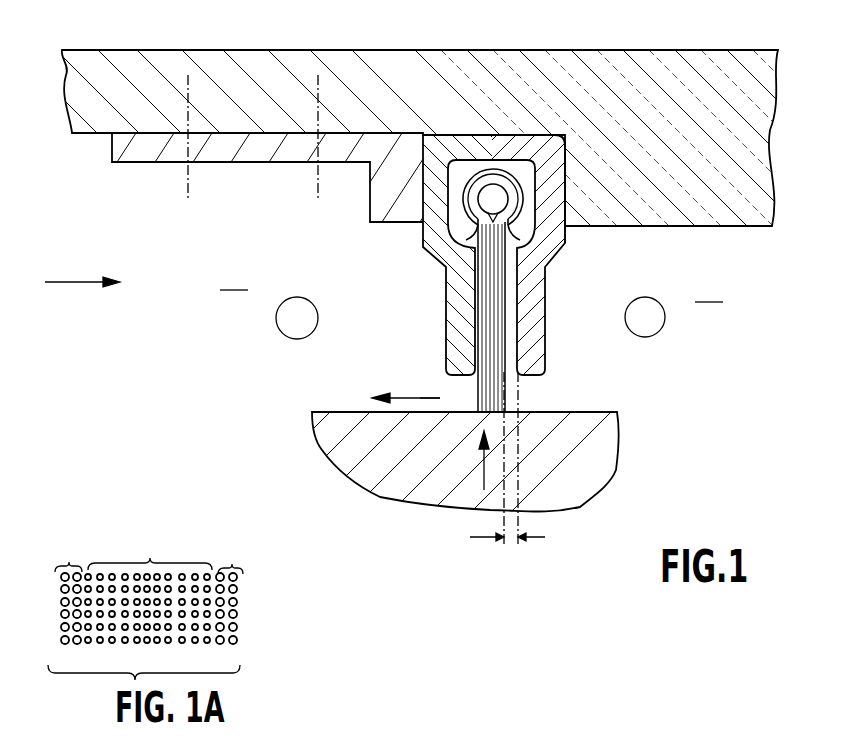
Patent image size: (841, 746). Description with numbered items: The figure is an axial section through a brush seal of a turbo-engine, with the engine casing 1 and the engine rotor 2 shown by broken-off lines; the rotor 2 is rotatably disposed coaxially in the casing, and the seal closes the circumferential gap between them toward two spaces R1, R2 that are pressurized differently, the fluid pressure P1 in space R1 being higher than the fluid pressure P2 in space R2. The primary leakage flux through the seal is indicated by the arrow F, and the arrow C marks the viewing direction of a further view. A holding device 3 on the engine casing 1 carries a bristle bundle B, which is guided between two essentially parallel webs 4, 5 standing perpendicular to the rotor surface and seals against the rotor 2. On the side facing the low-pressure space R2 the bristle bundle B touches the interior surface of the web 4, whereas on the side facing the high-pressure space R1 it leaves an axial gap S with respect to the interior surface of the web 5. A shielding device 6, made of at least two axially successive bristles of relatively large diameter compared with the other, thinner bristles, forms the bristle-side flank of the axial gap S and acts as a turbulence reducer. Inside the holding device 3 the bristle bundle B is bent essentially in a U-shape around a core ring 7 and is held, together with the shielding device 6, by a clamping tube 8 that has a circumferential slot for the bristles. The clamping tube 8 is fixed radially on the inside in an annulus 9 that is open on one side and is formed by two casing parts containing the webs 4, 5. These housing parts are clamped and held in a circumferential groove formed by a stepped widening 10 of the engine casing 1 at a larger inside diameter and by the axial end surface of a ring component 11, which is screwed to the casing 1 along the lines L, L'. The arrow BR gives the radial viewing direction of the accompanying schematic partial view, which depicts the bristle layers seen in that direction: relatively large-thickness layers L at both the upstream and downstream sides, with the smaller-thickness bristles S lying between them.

In FIG. 1, the engine casing 1 is at (566, 55).
In FIG. 1, the engine rotor 2 is at (342, 466).
In FIG. 1, the holding device 3 is at (527, 164).
In FIG. 1, the web 4 is at (458, 327).
In FIG. 1, the web 5 is at (540, 287).
In FIG. 1, the shielding device 6 is at (505, 398).
In FIG. 1, the core ring 7 is at (493, 198).
In FIG. 1, the clamping tube 8 is at (478, 165).
In FIG. 1, the annulus 9 is at (468, 238).
In FIG. 1, the stepped widening 10 is at (547, 135).
In FIG. 1, the ring component 11 is at (158, 152).
In FIG. 1, the line / large thickness layer L is at (170, 109).
In FIG. 1A, the line / large thickness layer L is at (138, 584).
In FIG. 1, the line L' is at (296, 110).
In FIG. 1, the axial gap / smaller thickness bristles S is at (512, 545).
In FIG. 1A, the axial gap / smaller thickness bristles S is at (150, 558).
In FIG. 1, the viewing direction C is at (75, 282).
In FIG. 1, the primary leakage flux F is at (402, 395).
In FIG. 1, the bristle bundle B is at (477, 393).
In FIG. 1, the viewing direction arrow BR is at (484, 488).
In FIG. 1, the space R1 is at (711, 289).
In FIG. 1, the space R2 is at (236, 277).
In FIG. 1, the fluid pressure P1 is at (645, 317).
In FIG. 1, the fluid pressure P2 is at (297, 318).